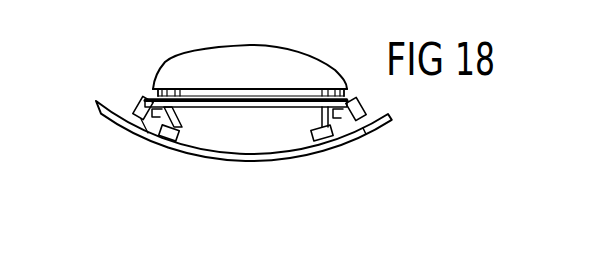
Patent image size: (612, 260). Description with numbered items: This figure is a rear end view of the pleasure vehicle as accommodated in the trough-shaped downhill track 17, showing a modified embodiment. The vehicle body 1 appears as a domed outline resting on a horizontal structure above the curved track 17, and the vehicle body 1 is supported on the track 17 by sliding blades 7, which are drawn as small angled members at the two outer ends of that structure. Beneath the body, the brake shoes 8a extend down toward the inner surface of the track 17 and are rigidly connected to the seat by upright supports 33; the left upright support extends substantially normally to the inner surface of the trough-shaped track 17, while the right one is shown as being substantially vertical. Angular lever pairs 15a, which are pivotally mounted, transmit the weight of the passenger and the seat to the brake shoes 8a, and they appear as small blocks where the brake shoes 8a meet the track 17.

The vehicle body 1 is at (268, 68).
The sliding blades 7 is at (139, 100).
The brake shoes 8a is at (164, 146).
The angular lever pair 15a is at (156, 133).
The downhill track 17 is at (109, 118).
The upright supports 33 is at (313, 113).